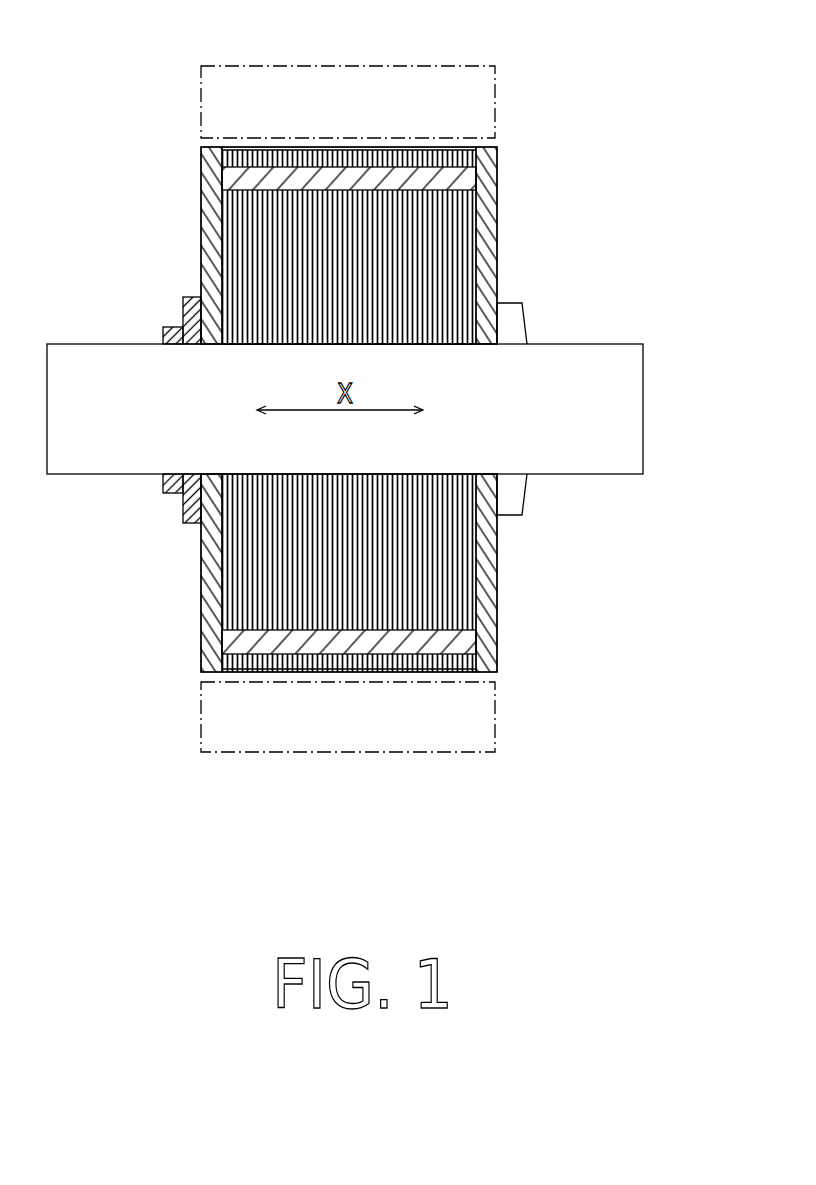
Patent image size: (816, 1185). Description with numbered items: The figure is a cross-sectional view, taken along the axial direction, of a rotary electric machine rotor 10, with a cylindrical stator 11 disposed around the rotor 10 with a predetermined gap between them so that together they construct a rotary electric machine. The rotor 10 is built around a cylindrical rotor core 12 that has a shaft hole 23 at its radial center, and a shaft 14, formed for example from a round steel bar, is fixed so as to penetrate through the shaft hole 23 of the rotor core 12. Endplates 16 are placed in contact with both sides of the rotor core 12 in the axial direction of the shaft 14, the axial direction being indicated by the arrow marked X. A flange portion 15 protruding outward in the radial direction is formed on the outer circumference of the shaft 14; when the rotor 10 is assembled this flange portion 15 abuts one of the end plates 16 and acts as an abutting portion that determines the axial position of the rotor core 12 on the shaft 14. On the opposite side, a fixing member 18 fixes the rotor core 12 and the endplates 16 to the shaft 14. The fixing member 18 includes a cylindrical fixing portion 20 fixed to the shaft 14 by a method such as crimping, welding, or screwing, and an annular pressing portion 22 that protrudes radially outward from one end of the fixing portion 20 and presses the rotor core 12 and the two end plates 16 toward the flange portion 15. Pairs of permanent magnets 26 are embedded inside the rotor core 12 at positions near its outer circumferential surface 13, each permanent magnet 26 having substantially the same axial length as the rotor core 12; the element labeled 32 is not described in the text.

The rotary electric machine rotor 10 is at (500, 146).
The stator 11 is at (439, 62).
The rotor core 12 is at (341, 145).
The outer circumferential surface 13 is at (392, 146).
The shaft 14 is at (598, 341).
The flange portion 15 is at (508, 303).
The endplate 16 is at (201, 172).
The fixing member 18 is at (129, 377).
The fixing portion 20 is at (145, 385).
The pressing portion 22 is at (185, 320).
The shaft hole 23 is at (255, 343).
The permanent magnet 26 is at (262, 165).
The permanent magnet 32 is at (452, 174).